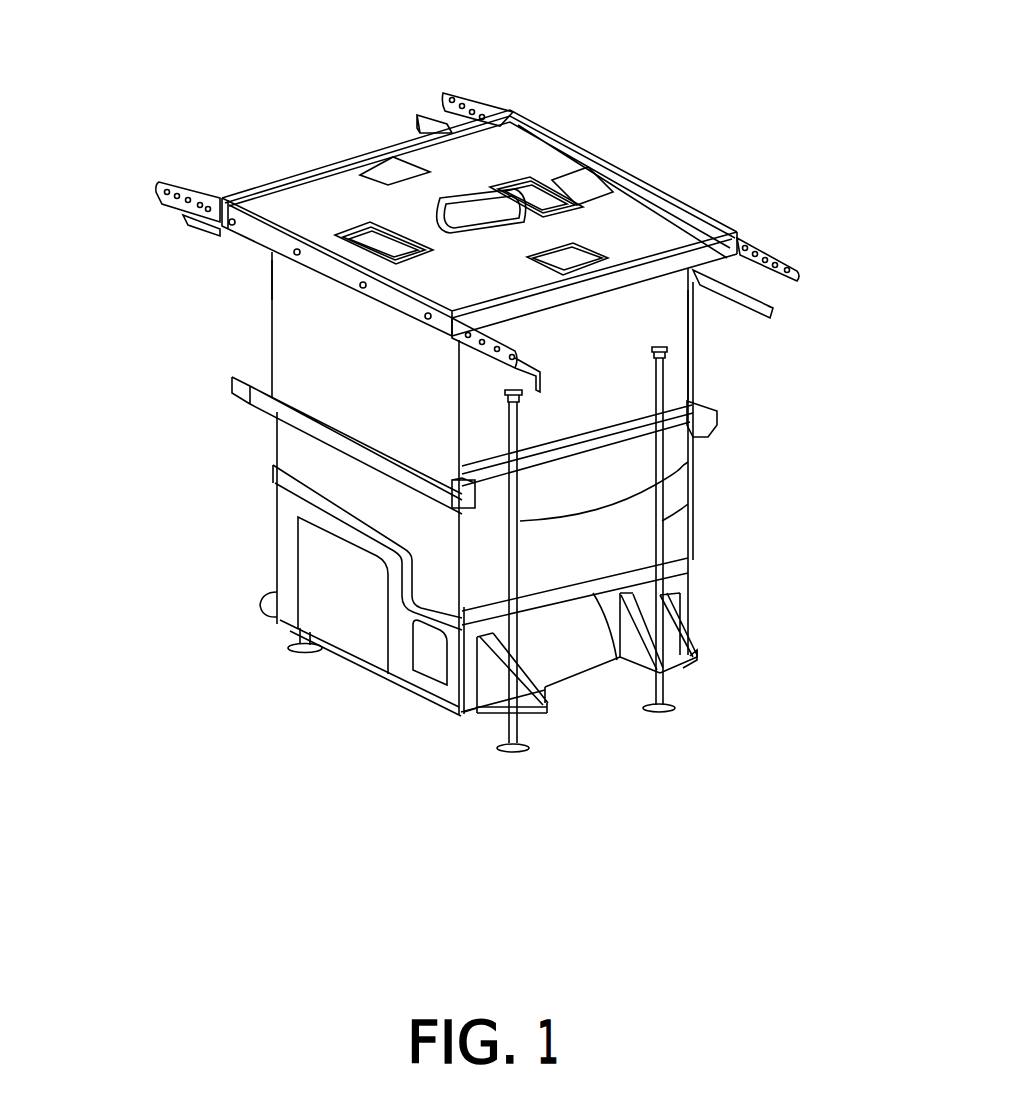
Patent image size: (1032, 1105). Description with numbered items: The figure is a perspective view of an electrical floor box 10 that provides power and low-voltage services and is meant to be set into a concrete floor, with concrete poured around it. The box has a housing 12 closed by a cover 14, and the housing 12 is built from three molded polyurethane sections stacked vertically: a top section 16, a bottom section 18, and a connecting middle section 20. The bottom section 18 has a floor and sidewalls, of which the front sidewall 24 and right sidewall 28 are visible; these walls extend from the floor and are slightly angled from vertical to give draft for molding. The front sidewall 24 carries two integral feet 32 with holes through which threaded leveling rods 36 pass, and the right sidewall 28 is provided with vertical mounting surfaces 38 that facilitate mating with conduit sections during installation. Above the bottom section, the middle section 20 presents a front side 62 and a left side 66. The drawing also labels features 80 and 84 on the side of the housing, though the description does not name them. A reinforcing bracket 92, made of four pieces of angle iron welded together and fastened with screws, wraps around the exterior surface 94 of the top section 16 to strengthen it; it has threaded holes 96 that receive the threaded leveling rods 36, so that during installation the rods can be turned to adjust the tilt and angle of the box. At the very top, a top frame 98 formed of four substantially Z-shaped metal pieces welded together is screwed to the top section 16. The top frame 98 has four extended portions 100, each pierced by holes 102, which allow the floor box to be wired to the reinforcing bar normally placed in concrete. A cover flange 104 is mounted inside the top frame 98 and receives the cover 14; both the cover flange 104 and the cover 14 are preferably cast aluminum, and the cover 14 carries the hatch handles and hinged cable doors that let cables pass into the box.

The electrical floor box 10 is at (313, 107).
The housing 12 is at (245, 326).
The cover 14 is at (505, 147).
The top section 16 is at (689, 352).
The bottom section 18 is at (683, 617).
The middle section 20 is at (688, 562).
The front sidewall 24 is at (555, 658).
The right sidewall 28 is at (397, 667).
The integral feet 32 is at (665, 702).
The threaded leveling rods 36 is at (688, 462).
The vertical mounting surfaces 38 is at (348, 623).
The front side 62 is at (617, 662).
The left side 66 is at (295, 488).
The rear wall 80 is at (660, 325).
The side support rail 84 is at (246, 357).
The reinforcing bracket 92 is at (262, 387).
The exterior surface 94 is at (292, 306).
The threaded holes 96 is at (688, 412).
The top frame 98 is at (220, 227).
The extended portions 100 is at (449, 92).
The holes 102 is at (192, 188).
The cover flange 104 is at (716, 232).